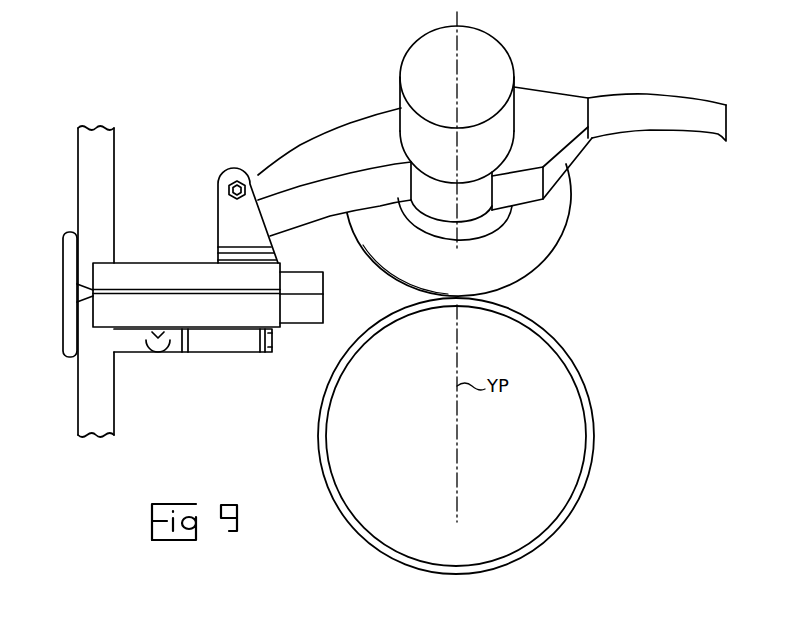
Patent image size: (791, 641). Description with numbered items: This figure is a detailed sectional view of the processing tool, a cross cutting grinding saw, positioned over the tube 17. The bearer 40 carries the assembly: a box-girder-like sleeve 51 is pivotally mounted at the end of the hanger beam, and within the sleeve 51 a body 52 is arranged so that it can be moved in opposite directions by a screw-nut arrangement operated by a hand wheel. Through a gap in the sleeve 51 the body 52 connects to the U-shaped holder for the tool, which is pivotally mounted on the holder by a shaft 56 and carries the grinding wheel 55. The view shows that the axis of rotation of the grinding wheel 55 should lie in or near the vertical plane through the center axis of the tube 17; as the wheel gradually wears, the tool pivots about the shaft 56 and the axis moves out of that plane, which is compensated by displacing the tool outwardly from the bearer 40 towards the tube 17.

The bearer 40 is at (74, 187).
The sleeve 51 is at (178, 274).
The body 52 is at (307, 318).
The grinding wheel 55 is at (530, 258).
The shaft 56 is at (236, 183).
The tube 17 is at (580, 376).